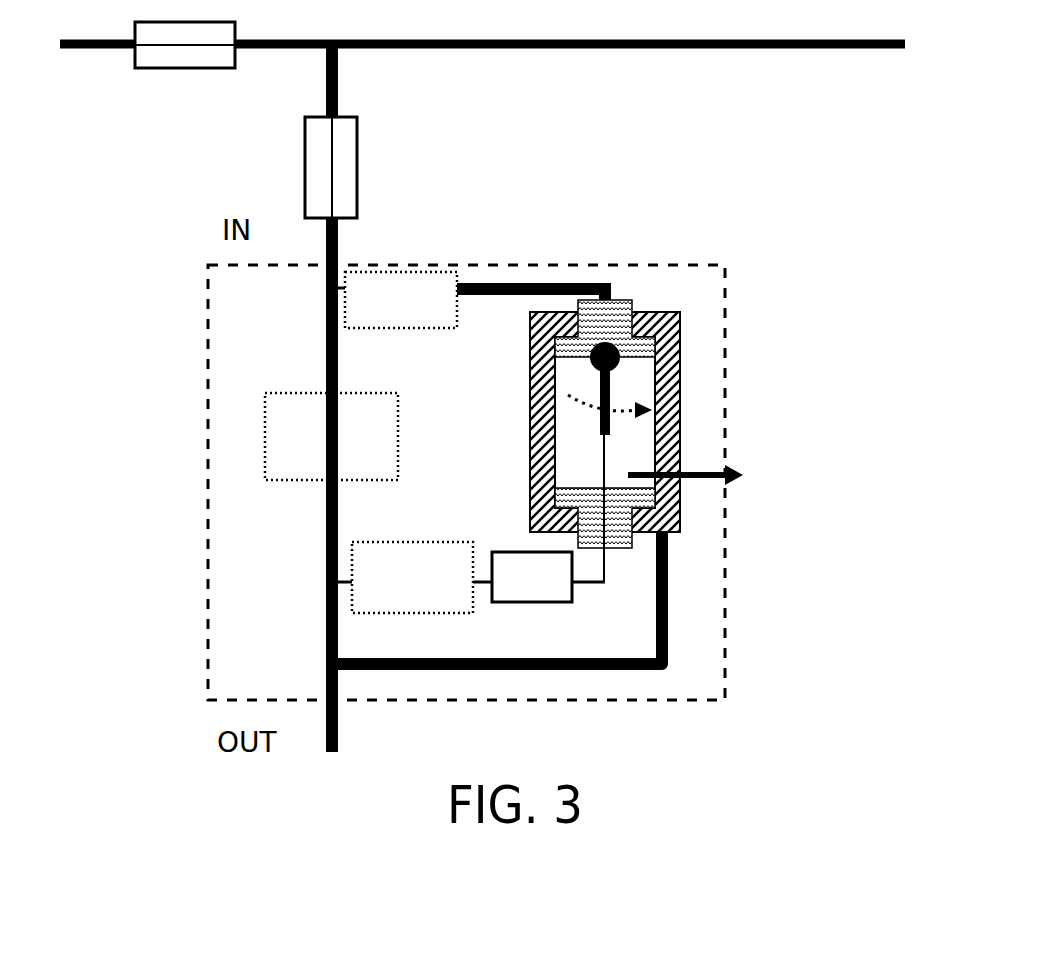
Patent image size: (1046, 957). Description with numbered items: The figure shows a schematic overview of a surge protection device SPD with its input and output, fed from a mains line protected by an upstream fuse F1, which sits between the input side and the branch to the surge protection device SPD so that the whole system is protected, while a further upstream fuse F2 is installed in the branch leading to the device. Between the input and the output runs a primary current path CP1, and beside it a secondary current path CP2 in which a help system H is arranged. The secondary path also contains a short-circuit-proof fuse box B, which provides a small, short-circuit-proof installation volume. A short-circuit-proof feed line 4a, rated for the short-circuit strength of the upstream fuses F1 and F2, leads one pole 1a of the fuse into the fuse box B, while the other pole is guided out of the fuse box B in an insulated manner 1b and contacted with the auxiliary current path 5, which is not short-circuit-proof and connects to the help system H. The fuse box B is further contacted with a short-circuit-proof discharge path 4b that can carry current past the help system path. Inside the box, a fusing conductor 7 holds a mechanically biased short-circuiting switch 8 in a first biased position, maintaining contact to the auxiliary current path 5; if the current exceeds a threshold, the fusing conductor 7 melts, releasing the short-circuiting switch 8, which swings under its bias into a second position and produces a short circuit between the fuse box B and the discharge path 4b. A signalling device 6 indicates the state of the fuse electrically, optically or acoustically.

The upstream fuse F1 is at (185, 71).
The upstream fuse F2 is at (360, 167).
The primary current path CP1 is at (331, 436).
The secondary current path CP2 is at (415, 442).
The help system H is at (532, 577).
The surge protection device SPD is at (728, 399).
The feed line 4a is at (490, 285).
The pole of the fuse 1a is at (633, 300).
The fuse box B is at (680, 335).
The short-circuiting switch 8 is at (613, 405).
The fusing conductor 7 is at (610, 475).
The signalling device 6 is at (743, 470).
The discharge path 4b is at (668, 565).
The insulated guide 1b is at (637, 495).
The auxiliary current path 5 is at (598, 592).